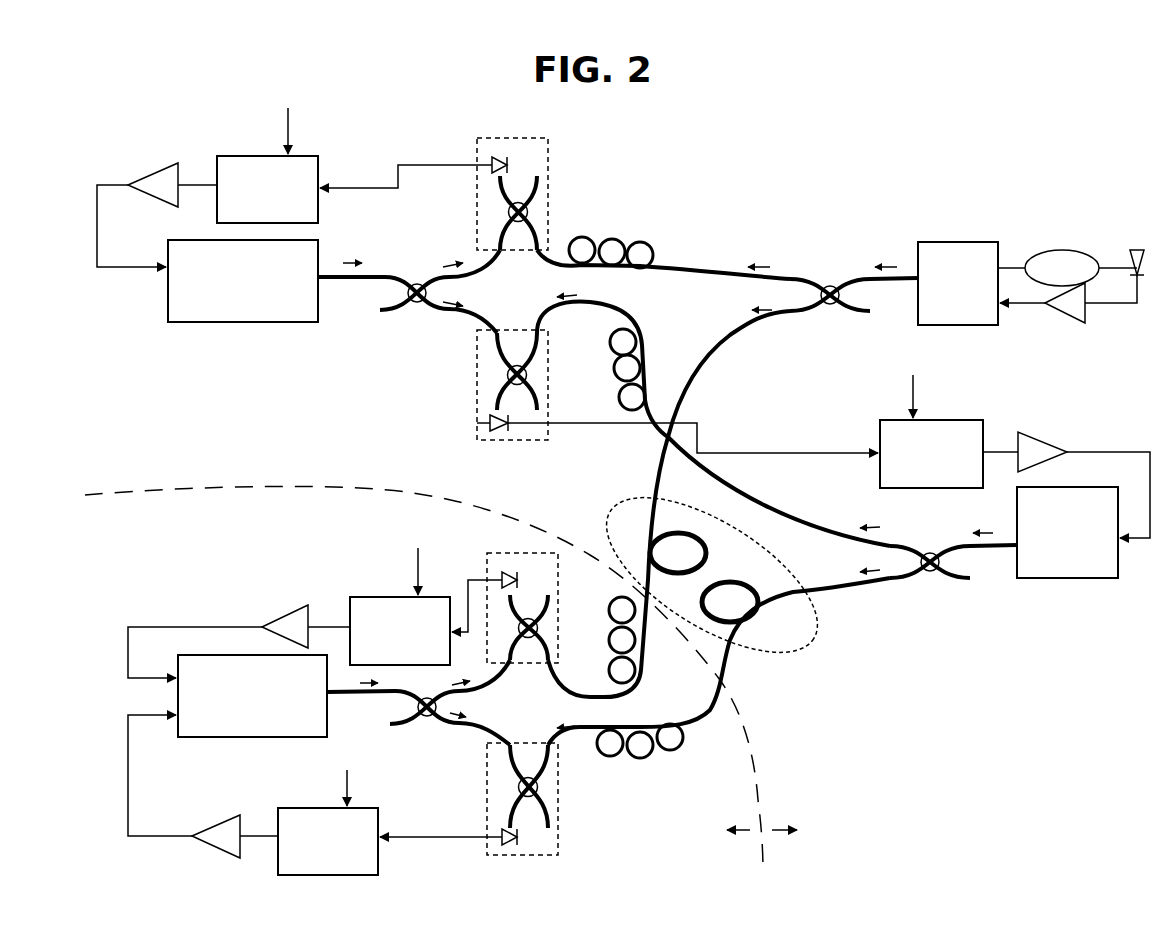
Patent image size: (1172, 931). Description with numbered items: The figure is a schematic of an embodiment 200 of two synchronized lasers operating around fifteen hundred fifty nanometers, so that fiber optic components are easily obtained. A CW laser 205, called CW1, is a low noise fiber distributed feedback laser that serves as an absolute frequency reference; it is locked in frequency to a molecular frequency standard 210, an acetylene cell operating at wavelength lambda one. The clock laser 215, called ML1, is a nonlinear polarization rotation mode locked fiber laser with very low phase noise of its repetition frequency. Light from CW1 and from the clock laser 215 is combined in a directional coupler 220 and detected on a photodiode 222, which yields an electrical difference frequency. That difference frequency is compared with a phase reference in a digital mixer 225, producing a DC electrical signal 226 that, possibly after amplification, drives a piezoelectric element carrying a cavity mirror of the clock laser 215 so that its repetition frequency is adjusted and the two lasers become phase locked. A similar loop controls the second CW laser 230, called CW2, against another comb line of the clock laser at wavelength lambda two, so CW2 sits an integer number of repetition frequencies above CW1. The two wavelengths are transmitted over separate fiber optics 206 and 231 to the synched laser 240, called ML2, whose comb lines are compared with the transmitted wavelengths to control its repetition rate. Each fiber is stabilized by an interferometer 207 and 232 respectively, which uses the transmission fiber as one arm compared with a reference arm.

The embodiment 200 is at (905, 780).
The CW laser 205 is at (926, 243).
The fiber optic 206 is at (650, 500).
The interferometer 207 is at (515, 553).
The molecular frequency standard 210 is at (1092, 253).
The clock laser 215 is at (263, 323).
The directional coupler 220 is at (548, 168).
The photodiode 222 is at (495, 158).
The digital mixer 225 is at (308, 157).
The DC electrical signal 226 is at (96, 223).
The second CW laser 230 is at (1050, 578).
The fiber optic 231 is at (813, 587).
The interferometer 232 is at (535, 743).
The synched laser 240 is at (210, 737).